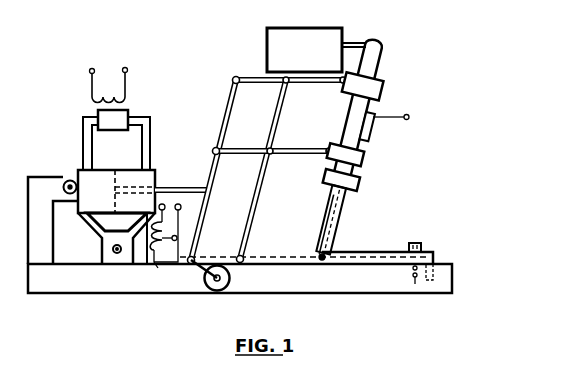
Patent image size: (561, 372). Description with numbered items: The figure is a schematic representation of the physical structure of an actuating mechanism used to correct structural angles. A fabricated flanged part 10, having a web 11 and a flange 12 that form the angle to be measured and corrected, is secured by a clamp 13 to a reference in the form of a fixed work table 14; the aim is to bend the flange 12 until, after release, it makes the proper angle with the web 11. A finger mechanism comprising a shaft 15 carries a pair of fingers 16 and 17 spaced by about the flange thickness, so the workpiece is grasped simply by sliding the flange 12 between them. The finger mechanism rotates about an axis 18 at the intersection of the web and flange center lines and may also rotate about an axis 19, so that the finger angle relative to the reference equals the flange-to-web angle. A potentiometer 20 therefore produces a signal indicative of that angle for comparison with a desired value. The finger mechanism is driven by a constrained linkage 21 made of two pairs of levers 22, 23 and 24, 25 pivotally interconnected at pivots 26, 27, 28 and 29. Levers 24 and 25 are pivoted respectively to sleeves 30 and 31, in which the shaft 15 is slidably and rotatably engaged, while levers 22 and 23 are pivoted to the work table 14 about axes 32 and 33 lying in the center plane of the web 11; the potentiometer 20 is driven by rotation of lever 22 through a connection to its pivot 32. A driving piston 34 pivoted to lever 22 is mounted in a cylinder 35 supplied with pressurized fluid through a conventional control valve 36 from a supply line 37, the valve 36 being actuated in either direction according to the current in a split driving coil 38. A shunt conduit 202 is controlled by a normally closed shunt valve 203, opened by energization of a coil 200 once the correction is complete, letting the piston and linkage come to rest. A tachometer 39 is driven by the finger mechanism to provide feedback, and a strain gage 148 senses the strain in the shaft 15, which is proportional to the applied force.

The fabricated flanged part 10 is at (345, 240).
The web 11 is at (357, 251).
The flange 12 is at (341, 208).
The clamp 13 is at (432, 250).
The fixed work table 14 is at (438, 280).
The shaft 15 is at (350, 113).
The finger 16 is at (325, 220).
The finger 17 is at (342, 219).
The axis 18 is at (323, 260).
The axis 19 is at (317, 277).
The potentiometer 20 is at (230, 278).
The constrained linkage 21 is at (221, 109).
The lever 22 is at (213, 176).
The lever 23 is at (262, 176).
The lever 24 is at (262, 78).
The lever 25 is at (255, 150).
The pivot 26 is at (233, 78).
The pivot 27 is at (288, 82).
The pivot 28 is at (206, 146).
The pivot 29 is at (275, 150).
The sleeve 30 is at (383, 87).
The sleeve 31 is at (363, 158).
The axis 32 is at (196, 259).
The axis 33 is at (246, 259).
The driving piston 34 is at (190, 187).
The cylinder 35 is at (130, 172).
The control valve 36 is at (101, 243).
The supply line 37 is at (116, 254).
The split driving coil 38 is at (156, 262).
The tachometer 39 is at (318, 32).
The strain gage 148 is at (372, 124).
The coil 200 is at (128, 98).
The shunt conduit 202 is at (83, 153).
The shunt valve 203 is at (113, 120).